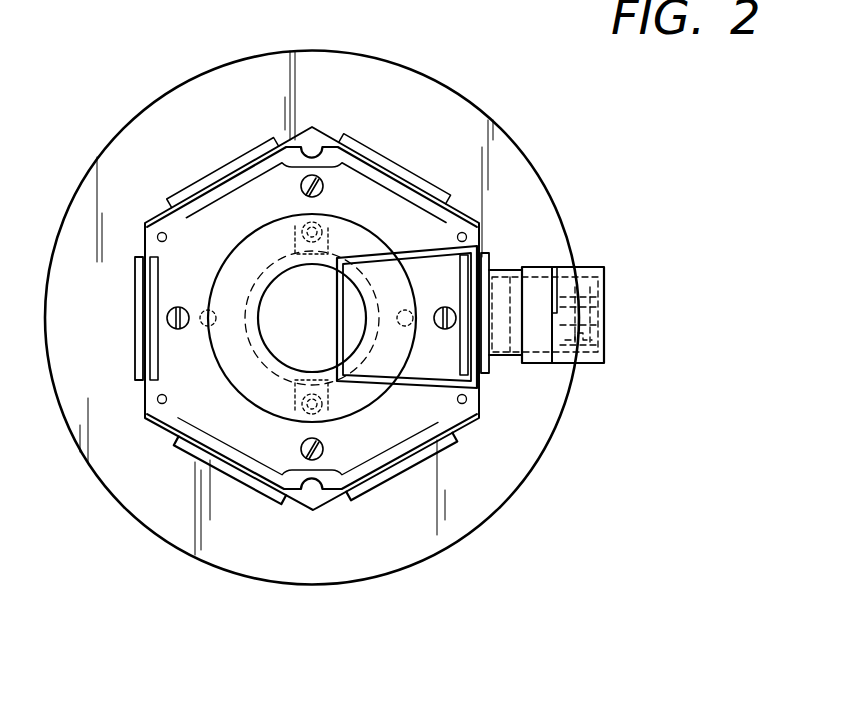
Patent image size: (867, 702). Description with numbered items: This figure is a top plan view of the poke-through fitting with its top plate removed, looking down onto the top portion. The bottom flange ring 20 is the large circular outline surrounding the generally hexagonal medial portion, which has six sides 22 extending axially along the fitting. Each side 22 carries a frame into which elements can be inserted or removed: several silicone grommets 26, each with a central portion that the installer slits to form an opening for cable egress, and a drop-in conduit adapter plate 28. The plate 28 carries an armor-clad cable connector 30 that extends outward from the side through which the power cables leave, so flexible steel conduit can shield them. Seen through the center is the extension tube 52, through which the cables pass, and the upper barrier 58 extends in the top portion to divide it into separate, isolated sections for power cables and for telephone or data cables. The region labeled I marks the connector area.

The bottom flange ring 20 is at (477, 495).
The sides 22 is at (148, 422).
The grommets 26 is at (227, 467).
The drop-in conduit adapter plate 28 is at (483, 370).
The armor-clad cable connector 30 is at (600, 290).
The extension tube 52 is at (372, 237).
The upper barrier 58 is at (397, 380).
The inset detail region I is at (505, 290).